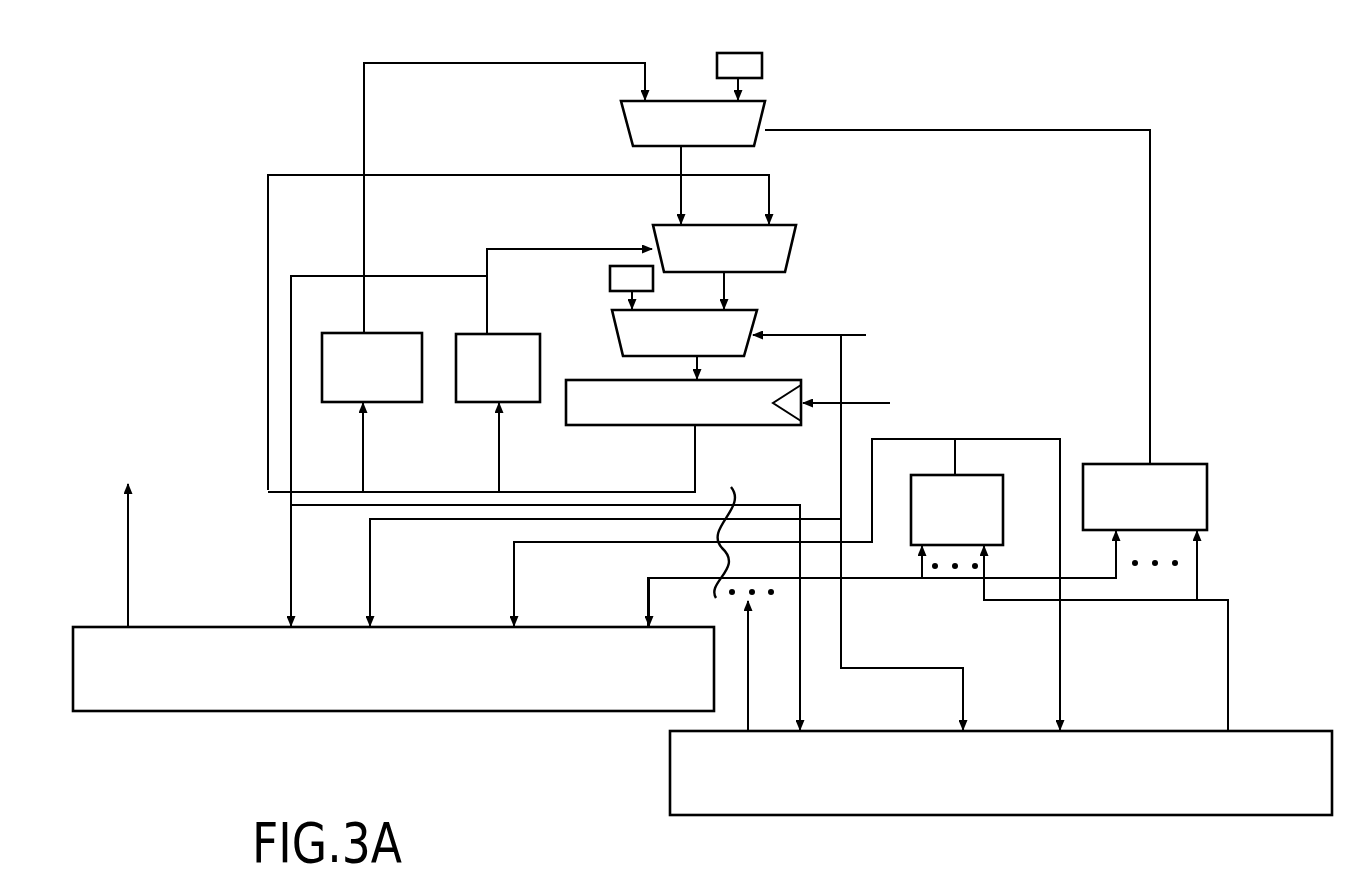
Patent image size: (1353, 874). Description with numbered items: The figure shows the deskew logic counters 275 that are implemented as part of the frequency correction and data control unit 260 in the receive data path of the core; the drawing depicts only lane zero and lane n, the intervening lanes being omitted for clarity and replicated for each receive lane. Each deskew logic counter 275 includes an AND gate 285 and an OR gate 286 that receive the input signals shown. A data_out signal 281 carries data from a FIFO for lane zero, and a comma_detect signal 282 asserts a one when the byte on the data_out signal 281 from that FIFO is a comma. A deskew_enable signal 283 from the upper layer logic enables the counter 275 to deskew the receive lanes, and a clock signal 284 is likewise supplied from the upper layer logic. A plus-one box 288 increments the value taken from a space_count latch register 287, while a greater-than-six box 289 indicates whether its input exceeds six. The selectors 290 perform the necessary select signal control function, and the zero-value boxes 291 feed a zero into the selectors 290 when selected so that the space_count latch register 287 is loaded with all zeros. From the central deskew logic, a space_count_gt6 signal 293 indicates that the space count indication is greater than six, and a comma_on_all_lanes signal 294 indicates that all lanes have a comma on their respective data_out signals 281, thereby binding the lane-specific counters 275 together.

The frequency correction and data control unit 260 is at (1200, 117).
The deskew logic counter 275 is at (397, 711).
The data_out signal 281 is at (128, 578).
The comma_detect signal 282 is at (648, 595).
The deskew_enable signal 283 is at (370, 585).
The clock signal 284 is at (891, 402).
The AND gate 285 is at (911, 518).
The OR gate 286 is at (1178, 464).
The space_count latch register 287 is at (636, 425).
The +1 box 288 is at (385, 402).
The 6 box 289 is at (540, 370).
The selectors 290 is at (757, 143).
The 0x0 boxes 291 is at (762, 65).
The space_count_gt6 signal 293 is at (291, 578).
The comma_on_all_lanes signal 294 is at (514, 590).